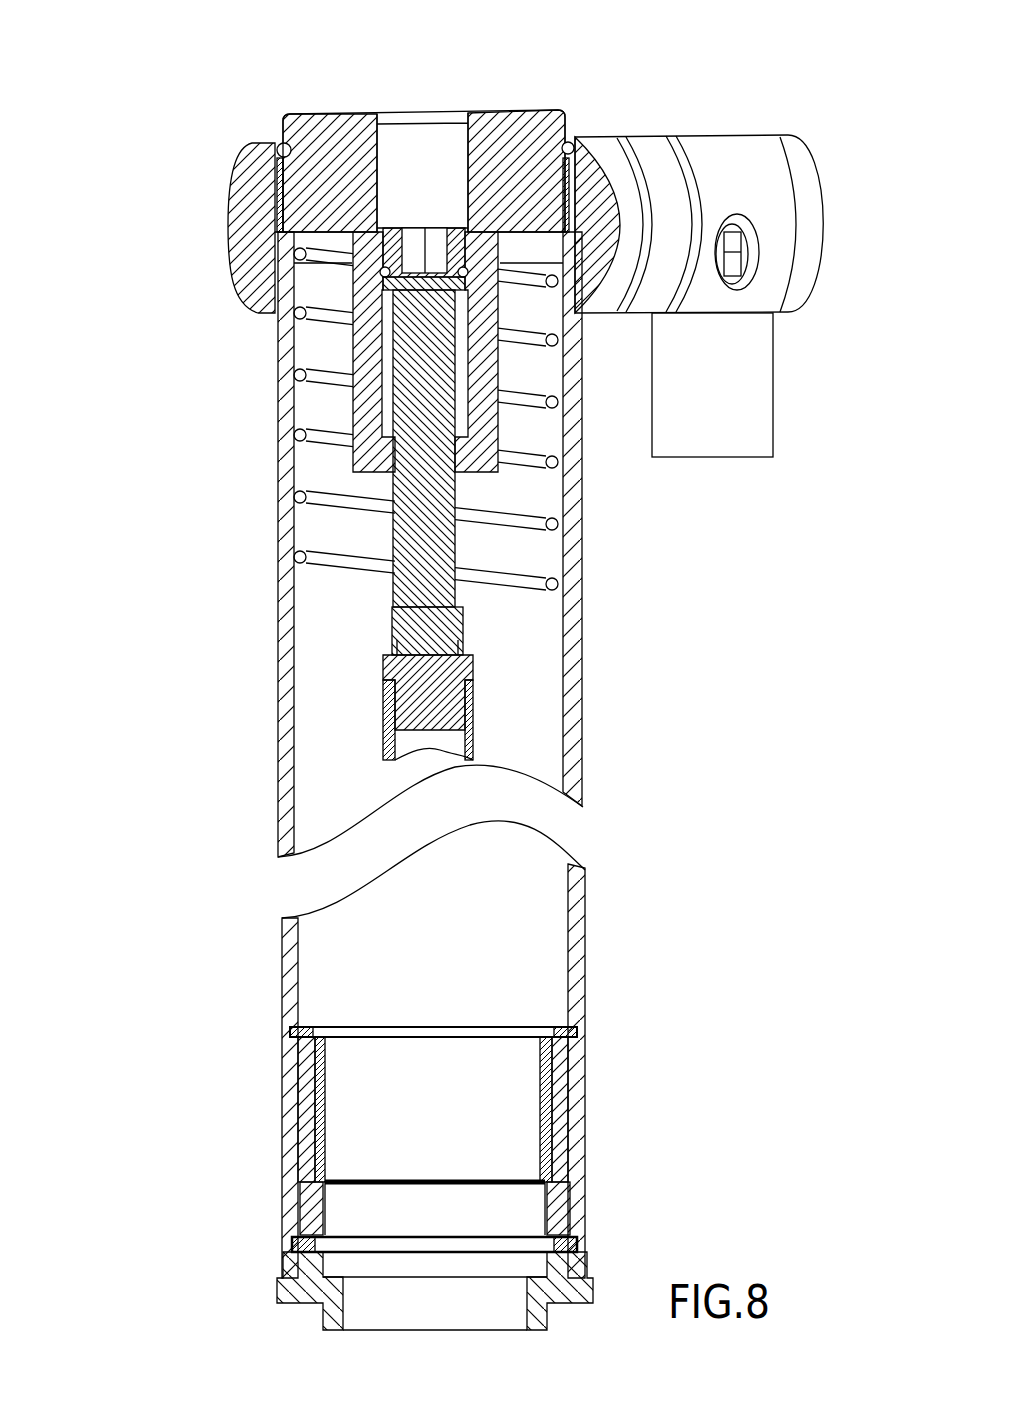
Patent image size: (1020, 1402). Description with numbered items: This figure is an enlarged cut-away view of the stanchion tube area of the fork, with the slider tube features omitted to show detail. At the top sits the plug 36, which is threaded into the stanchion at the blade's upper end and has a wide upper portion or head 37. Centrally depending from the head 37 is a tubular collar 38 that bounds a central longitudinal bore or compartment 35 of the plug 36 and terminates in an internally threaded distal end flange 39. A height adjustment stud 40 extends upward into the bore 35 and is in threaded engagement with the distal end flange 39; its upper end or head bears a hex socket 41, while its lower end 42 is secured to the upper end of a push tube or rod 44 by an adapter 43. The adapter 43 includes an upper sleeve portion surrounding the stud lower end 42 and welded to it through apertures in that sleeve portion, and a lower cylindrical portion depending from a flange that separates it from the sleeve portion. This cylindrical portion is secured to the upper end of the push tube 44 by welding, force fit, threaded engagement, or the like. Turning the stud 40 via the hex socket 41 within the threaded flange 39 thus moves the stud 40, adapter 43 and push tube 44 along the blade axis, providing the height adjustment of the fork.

The central longitudinal bore 35 is at (453, 152).
The plug 36 is at (527, 137).
The head 37 is at (318, 184).
The tubular collar 38 is at (365, 410).
The distal end flange 39 is at (384, 458).
The height adjustment stud 40 is at (436, 552).
The hex socket 41 is at (432, 243).
The lower end 42 is at (440, 637).
The adapter 43 is at (388, 668).
The push tube 44 is at (473, 702).